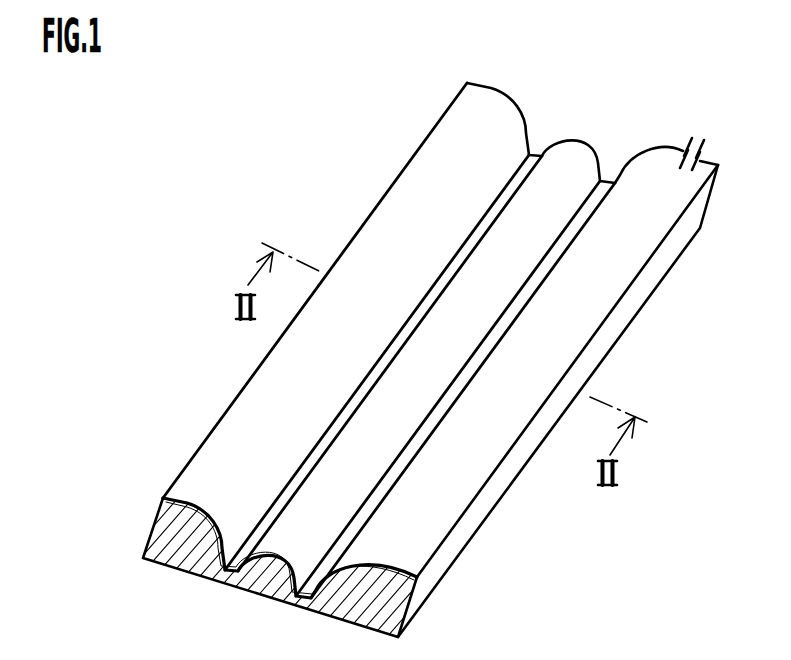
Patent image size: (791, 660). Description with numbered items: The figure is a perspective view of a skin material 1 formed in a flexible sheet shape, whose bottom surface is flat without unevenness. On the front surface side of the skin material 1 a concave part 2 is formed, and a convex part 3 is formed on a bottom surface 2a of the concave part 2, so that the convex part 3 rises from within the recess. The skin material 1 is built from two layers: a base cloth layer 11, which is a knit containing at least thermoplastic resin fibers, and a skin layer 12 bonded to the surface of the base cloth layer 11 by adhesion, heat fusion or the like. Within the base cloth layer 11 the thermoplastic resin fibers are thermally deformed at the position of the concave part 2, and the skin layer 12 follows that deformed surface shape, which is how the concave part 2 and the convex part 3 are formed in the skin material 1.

The skin material 1 is at (359, 337).
The concave part 2 is at (465, 220).
The bottom surface of the concave part 2a is at (442, 283).
The convex part 3 is at (527, 213).
The base cloth layer 11 is at (140, 517).
The skin layer 12 is at (248, 450).